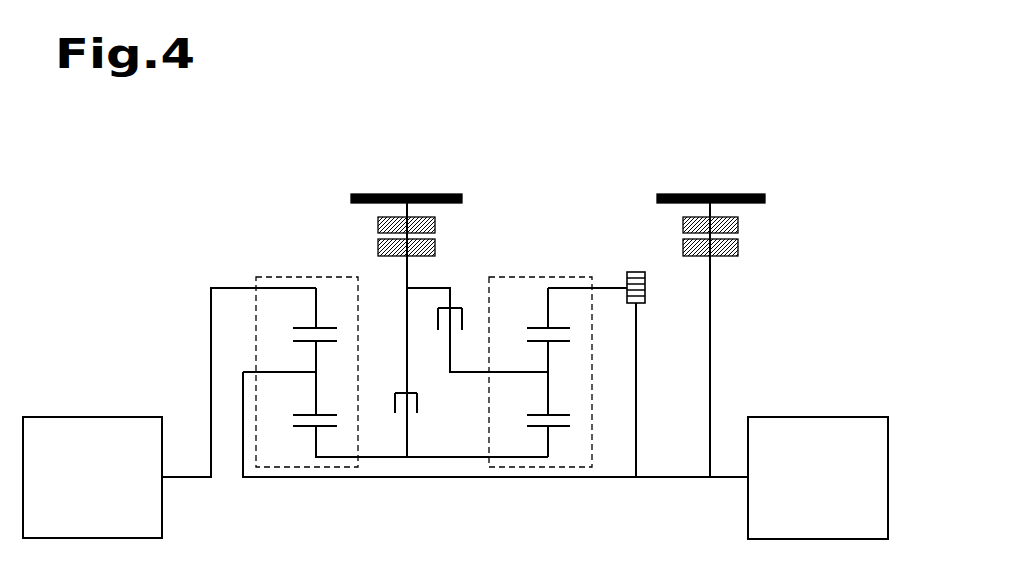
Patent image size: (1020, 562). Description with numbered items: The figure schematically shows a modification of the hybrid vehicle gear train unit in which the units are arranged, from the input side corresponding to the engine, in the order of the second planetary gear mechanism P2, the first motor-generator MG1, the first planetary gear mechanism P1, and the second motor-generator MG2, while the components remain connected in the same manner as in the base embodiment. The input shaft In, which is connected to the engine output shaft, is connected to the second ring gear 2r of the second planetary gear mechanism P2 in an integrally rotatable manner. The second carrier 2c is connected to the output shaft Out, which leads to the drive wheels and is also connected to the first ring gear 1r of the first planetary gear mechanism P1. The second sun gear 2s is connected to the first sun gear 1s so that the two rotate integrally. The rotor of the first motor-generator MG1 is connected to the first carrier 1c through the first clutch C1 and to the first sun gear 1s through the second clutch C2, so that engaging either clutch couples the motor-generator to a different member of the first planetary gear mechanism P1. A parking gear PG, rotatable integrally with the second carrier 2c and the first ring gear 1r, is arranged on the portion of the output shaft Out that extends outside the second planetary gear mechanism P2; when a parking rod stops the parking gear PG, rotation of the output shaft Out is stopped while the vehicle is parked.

The input shaft In is at (177, 479).
The output shaft Out is at (732, 480).
The first planetary gear mechanism P1 is at (537, 277).
The second planetary gear mechanism P2 is at (271, 277).
The first ring gear 1r is at (548, 304).
The first carrier 1c is at (548, 390).
The first sun gear 1s is at (548, 443).
The second ring gear 2r is at (316, 304).
The second carrier 2c is at (316, 390).
The second sun gear 2s is at (316, 443).
The first motor-generator MG1 is at (392, 325).
The second motor-generator MG2 is at (728, 335).
The first clutch C1 is at (439, 324).
The second clutch C2 is at (417, 402).
The parking gear PG is at (632, 271).